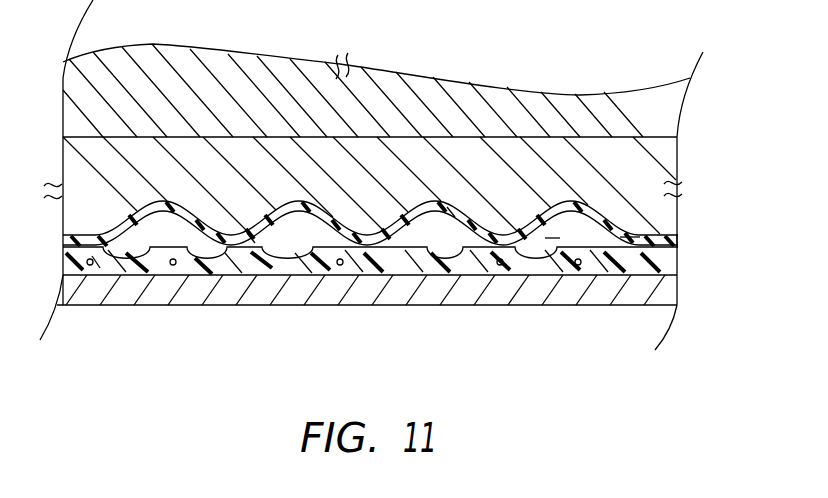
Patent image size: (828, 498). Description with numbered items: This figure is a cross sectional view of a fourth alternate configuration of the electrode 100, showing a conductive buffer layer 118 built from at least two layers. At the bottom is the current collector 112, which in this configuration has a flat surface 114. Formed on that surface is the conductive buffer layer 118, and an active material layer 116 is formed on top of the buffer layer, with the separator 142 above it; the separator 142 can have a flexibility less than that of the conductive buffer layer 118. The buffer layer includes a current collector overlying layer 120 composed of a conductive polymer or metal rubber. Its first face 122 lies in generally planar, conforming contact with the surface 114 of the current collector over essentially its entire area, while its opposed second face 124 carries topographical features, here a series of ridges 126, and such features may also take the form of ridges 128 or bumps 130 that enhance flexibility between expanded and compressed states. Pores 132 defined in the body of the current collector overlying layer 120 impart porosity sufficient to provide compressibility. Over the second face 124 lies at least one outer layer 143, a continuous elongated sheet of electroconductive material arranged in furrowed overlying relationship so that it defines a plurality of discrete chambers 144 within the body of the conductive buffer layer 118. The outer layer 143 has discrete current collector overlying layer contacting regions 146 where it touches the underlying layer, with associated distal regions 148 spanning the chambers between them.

The electrode 100 is at (721, 67).
The current collector 112 is at (668, 299).
The surface 114 is at (638, 231).
The active material layer 116 is at (610, 172).
The conductive buffer layer 118 is at (686, 237).
The current collector overlying layer 120 is at (62, 264).
The first face 122 is at (64, 278).
The second face 124 is at (72, 237).
The ridges 126 is at (190, 247).
The ridges 128 is at (251, 232).
The bumps 130 is at (373, 266).
The pores 132 is at (97, 268).
The separator 142 is at (536, 100).
The outer layer 143 is at (672, 233).
The discrete chambers 144 is at (587, 235).
The current collector overlying layer contacting regions 146 is at (372, 236).
The distal regions 148 is at (456, 206).